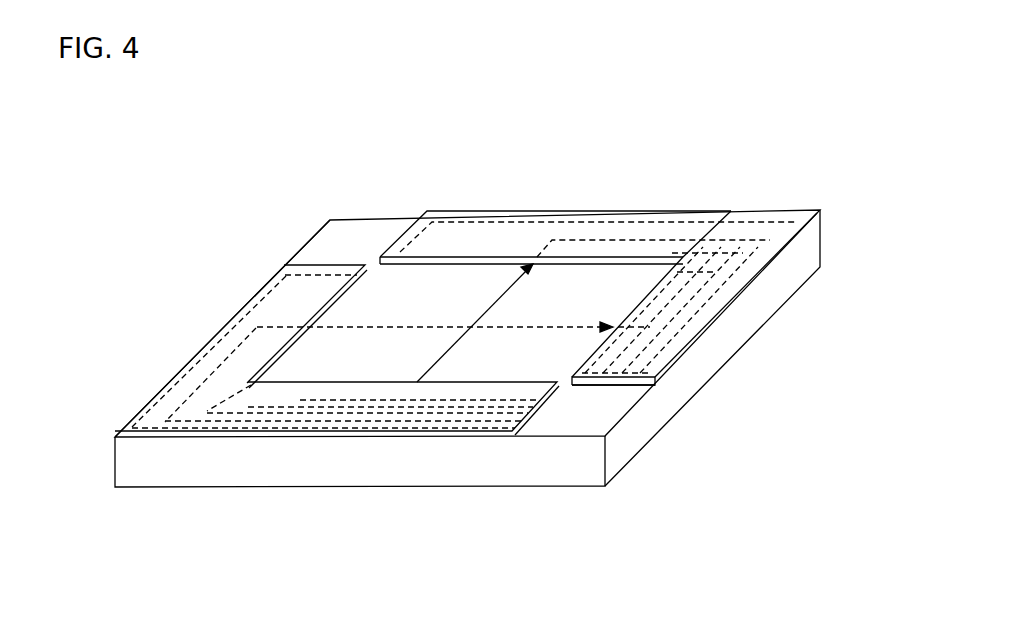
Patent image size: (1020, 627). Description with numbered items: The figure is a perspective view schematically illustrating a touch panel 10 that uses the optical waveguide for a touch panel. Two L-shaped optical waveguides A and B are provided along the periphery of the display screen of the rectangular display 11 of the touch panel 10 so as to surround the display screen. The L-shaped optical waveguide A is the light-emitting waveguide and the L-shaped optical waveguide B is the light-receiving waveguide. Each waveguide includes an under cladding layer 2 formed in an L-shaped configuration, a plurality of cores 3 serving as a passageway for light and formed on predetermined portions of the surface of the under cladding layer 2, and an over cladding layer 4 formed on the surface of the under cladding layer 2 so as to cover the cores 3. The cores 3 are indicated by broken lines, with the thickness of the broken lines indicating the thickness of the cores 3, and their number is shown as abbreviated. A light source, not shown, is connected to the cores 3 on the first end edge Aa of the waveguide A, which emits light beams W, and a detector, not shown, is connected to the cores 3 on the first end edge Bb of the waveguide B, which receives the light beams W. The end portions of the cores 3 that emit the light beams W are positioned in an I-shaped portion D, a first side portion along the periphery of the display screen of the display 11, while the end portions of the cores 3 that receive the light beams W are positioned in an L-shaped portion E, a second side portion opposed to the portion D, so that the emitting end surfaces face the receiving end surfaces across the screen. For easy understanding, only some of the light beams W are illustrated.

The touch panel 10 is at (338, 200).
The under cladding layer 2 is at (362, 438).
The cores 3 is at (712, 318).
The over cladding layer 4 is at (628, 227).
The display 11 is at (572, 280).
The L-shaped optical waveguide A is at (327, 262).
The L-shaped optical waveguide B is at (400, 238).
The I-shaped portion D is at (330, 308).
The L-shaped portion E is at (653, 290).
The light beams W is at (422, 327).
The first end edge Aa is at (527, 418).
The first end edge Bb is at (630, 383).